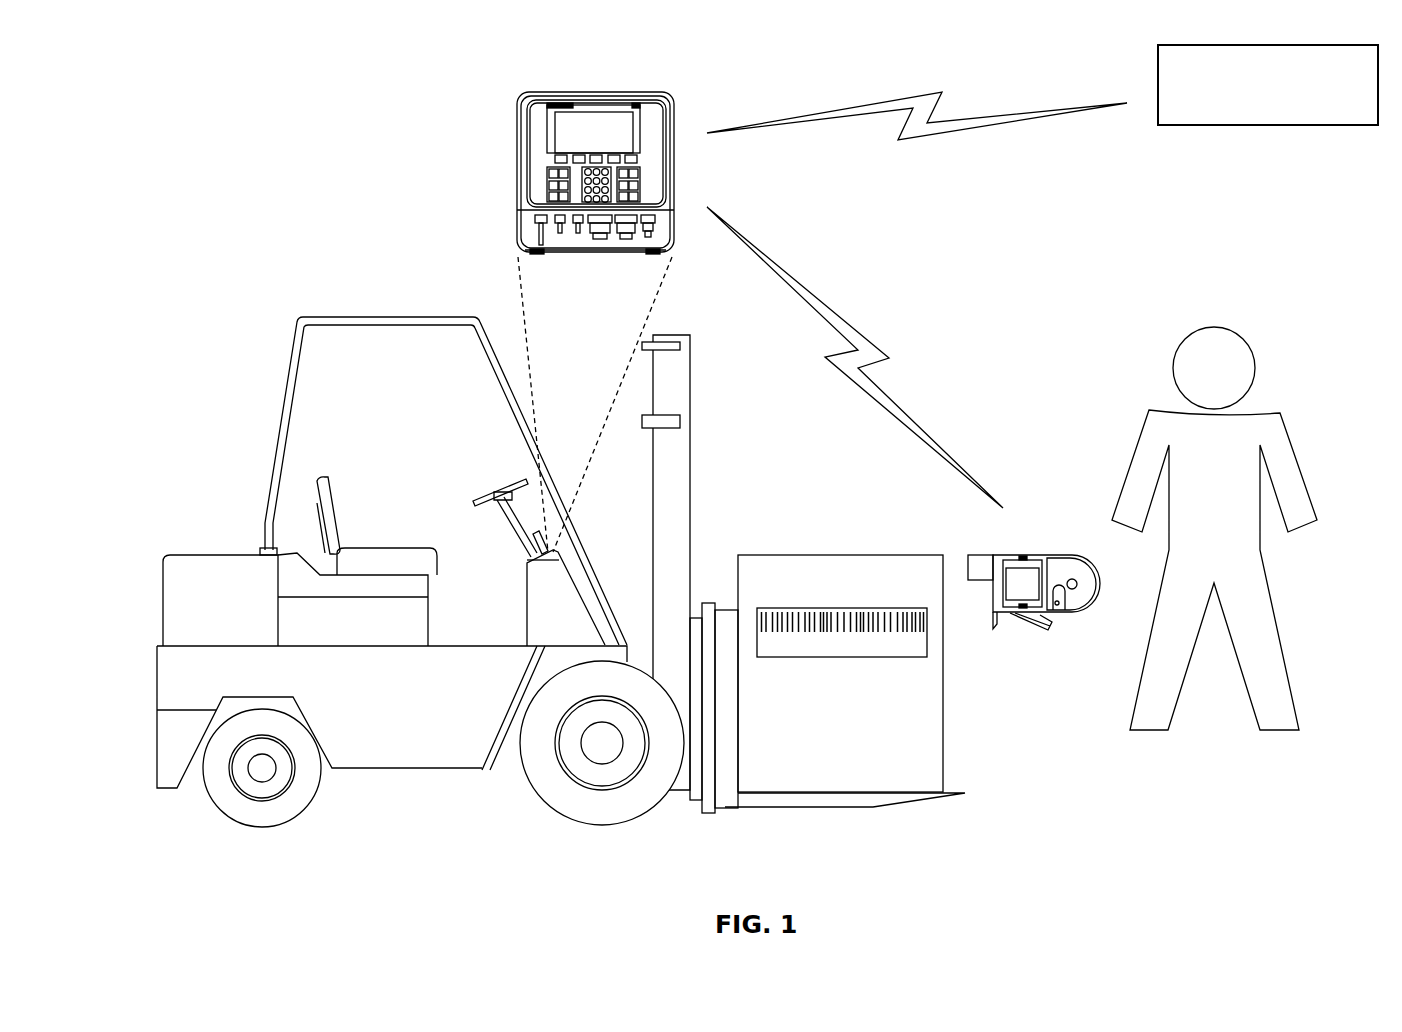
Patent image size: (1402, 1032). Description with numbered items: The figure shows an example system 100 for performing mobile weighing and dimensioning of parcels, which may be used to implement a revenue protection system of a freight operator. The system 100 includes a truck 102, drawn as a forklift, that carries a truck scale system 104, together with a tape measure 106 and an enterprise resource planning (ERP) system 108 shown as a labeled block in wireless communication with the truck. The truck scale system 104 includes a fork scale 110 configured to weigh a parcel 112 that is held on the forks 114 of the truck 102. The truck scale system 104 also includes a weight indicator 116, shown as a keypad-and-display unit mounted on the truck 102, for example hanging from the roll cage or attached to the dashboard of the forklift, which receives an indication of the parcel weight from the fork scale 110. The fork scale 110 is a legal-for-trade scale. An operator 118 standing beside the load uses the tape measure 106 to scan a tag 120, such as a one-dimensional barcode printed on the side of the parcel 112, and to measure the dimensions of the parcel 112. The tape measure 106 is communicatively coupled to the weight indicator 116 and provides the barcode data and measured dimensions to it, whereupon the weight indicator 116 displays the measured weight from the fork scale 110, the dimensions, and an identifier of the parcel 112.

The system 100 is at (280, 60).
The truck 102 is at (366, 316).
The truck scale system 104 is at (712, 500).
The tape measure 106 is at (1030, 555).
The enterprise resource planning (ERP) system 108 is at (1228, 45).
The fork scale 110 is at (721, 812).
The parcel 112 is at (808, 553).
The forks 114 is at (818, 810).
The weight indicator 116 is at (582, 92).
The operator 118 is at (1172, 412).
The tag 120 is at (826, 606).